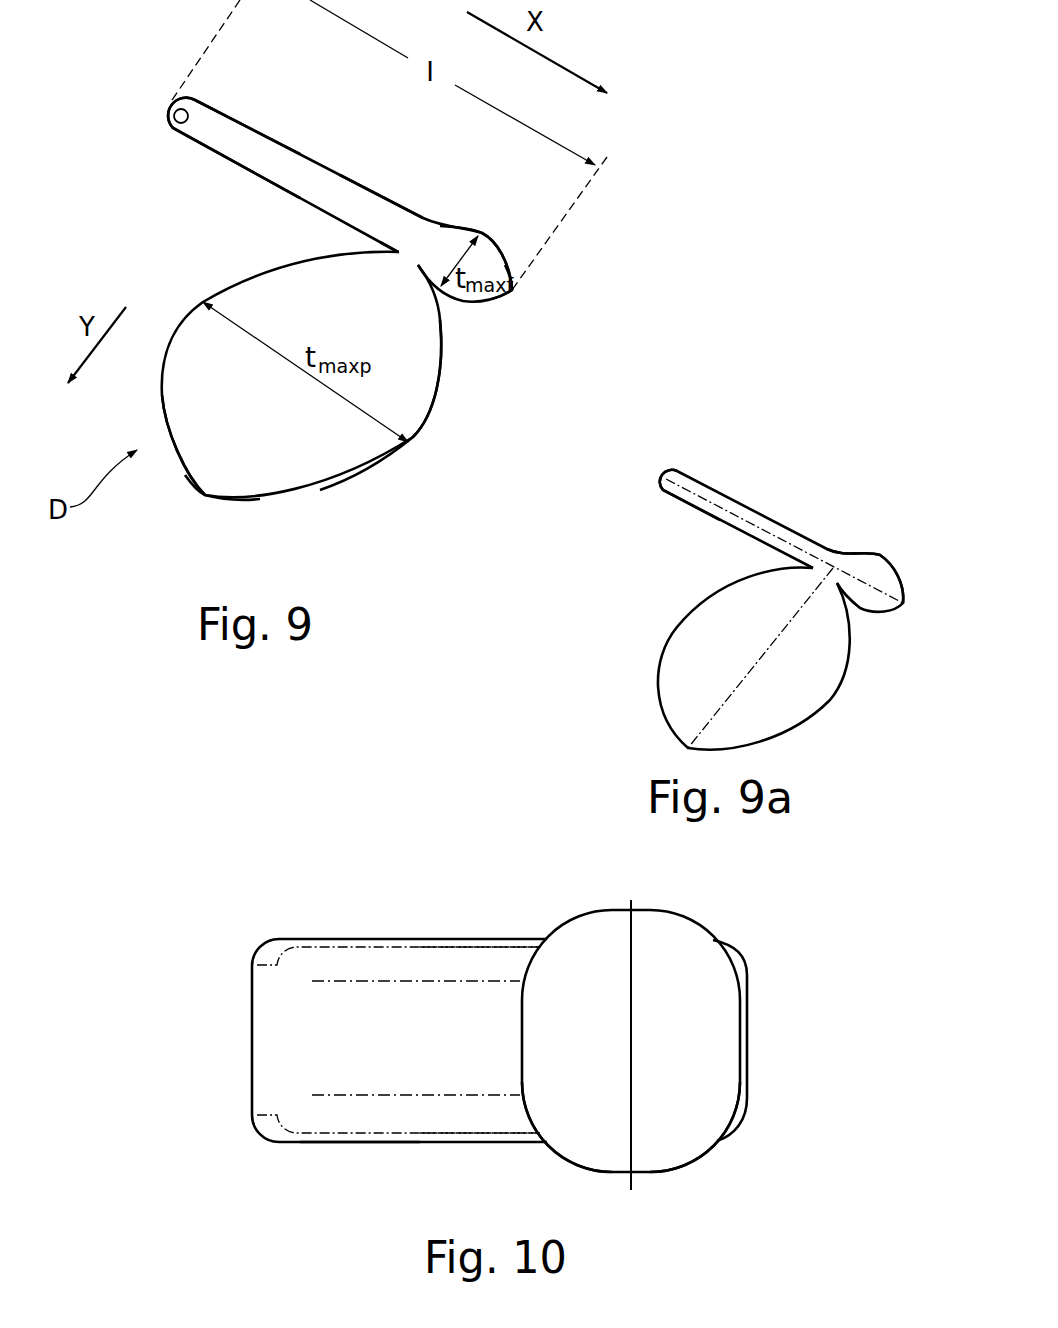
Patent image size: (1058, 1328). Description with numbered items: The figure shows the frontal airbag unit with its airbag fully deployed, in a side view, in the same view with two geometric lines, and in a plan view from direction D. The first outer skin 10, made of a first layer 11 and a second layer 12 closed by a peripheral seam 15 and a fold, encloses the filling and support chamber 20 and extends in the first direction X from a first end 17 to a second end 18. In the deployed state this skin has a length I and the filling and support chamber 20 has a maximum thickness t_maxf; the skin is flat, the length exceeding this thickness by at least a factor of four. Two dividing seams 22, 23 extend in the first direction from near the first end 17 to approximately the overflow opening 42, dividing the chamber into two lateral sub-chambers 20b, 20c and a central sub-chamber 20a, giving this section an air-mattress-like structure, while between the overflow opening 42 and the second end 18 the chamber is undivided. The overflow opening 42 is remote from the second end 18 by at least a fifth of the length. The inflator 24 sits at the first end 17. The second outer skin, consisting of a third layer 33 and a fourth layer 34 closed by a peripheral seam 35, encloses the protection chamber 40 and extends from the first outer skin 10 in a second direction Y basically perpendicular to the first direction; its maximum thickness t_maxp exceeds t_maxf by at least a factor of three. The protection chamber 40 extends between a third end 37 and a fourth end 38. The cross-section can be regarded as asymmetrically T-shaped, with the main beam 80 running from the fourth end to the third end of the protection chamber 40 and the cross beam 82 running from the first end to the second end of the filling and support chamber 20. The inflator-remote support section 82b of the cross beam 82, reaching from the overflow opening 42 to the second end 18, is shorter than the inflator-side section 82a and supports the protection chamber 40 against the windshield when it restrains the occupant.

In FIG. 9, the first outer skin 10 is at (343, 181).
In FIG. 9, the first layer 11 is at (262, 177).
In FIG. 9, the second layer 12 is at (253, 128).
In FIG. 9, the peripheral seam 15 is at (515, 293).
In FIG. 10, the peripheral seam 15 is at (337, 1133).
In FIG. 9, the first end 17 is at (158, 100).
In FIG. 10, the first end 17 is at (235, 1003).
In FIG. 9, the second end 18 is at (524, 290).
In FIG. 10, the second end 18 is at (764, 1025).
In FIG. 9, the filling and support chamber 20 is at (375, 213).
In FIG. 10, the central sub-chamber 20a is at (320, 1068).
In FIG. 10, the lateral sub-chamber 20b is at (463, 1115).
In FIG. 10, the lateral sub-chamber 20c is at (490, 965).
In FIG. 10, the dividing seam 22 is at (402, 1095).
In FIG. 10, the dividing seam 23 is at (395, 980).
In FIG. 9, the inflator 24 is at (168, 113).
In FIG. 9, the third layer 33 is at (270, 263).
In FIG. 10, the third layer 33 is at (580, 1115).
In FIG. 9, the fourth layer 34 is at (430, 420).
In FIG. 10, the fourth layer 34 is at (668, 1115).
In FIG. 9, the peripheral seam 35 is at (205, 497).
In FIG. 10, the peripheral seam 35 is at (630, 965).
In FIG. 9, the third end 37 is at (400, 248).
In FIG. 9, the fourth end 38 is at (192, 508).
In FIG. 9, the protection chamber 40 is at (360, 437).
In FIG. 9, the overflow opening 42 is at (412, 262).
In FIG. 9A, the main beam 80 is at (748, 672).
In FIG. 9A, the cross beam 82 is at (793, 547).
In FIG. 9A, the inflator-side section 82a is at (698, 497).
In FIG. 9A, the support section 82b is at (863, 580).